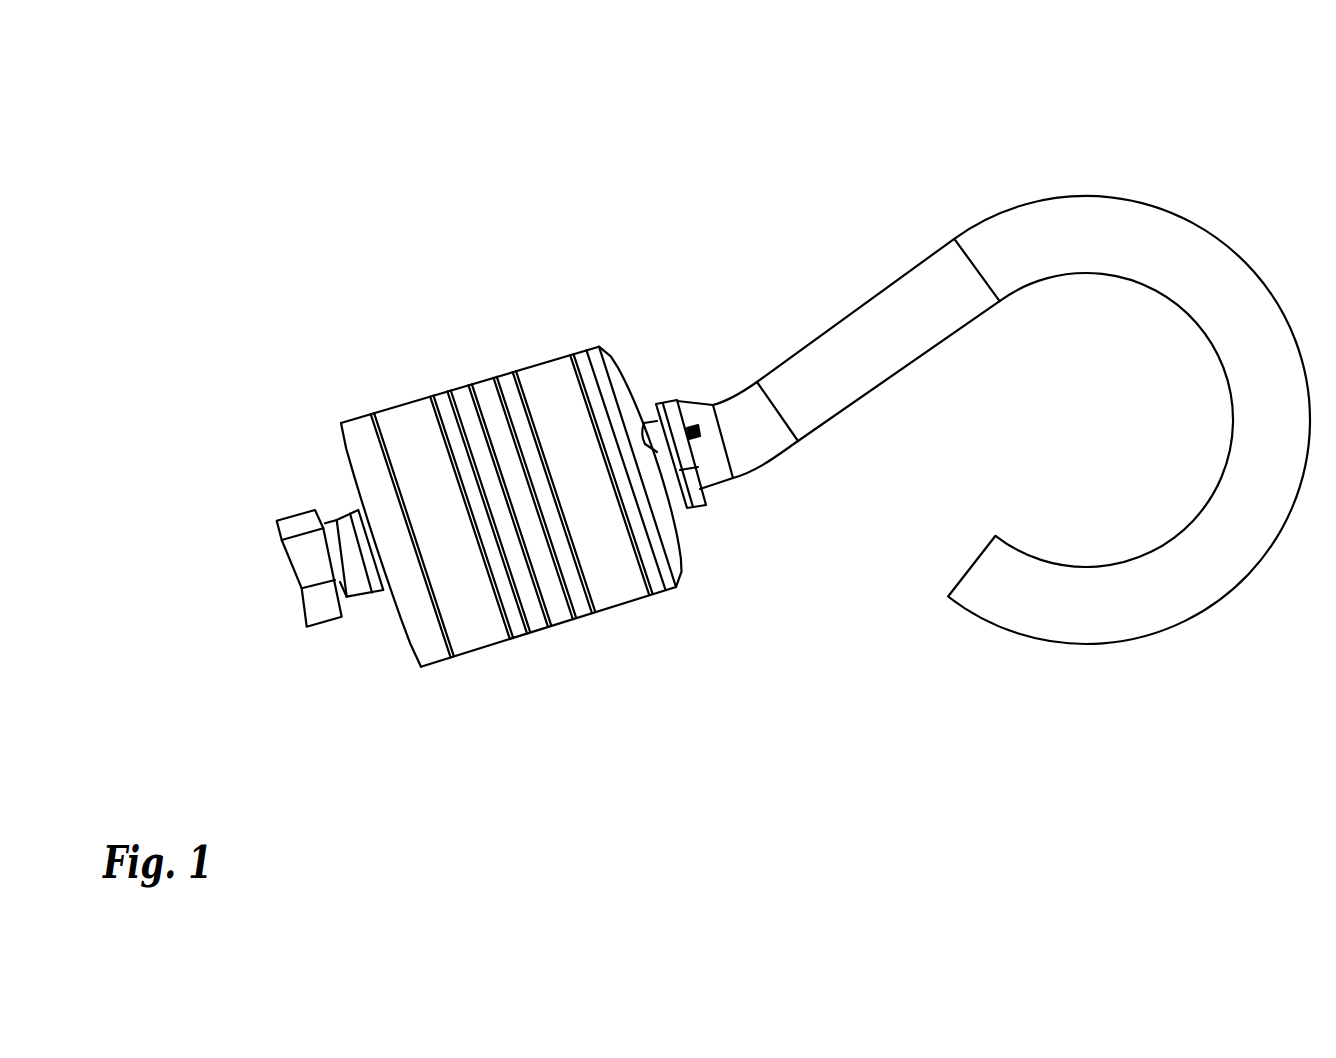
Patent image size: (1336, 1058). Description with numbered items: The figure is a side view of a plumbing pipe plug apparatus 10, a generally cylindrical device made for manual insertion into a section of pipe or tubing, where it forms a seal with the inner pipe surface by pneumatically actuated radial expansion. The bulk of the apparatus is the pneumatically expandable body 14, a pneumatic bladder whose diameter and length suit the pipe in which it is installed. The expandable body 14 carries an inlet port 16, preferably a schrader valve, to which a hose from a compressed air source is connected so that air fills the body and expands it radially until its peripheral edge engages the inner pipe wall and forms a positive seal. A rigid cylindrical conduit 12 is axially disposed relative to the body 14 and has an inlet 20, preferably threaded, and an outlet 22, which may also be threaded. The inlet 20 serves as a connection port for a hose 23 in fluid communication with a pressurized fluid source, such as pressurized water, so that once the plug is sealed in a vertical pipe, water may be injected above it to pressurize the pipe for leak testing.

The plumbing pipe plug apparatus 10 is at (792, 418).
The cylindrical conduit 12 is at (431, 630).
The pneumatically expandable body 14 is at (554, 378).
The inlet port 16 is at (683, 436).
The inlet 20 is at (668, 400).
The outlet 22 is at (317, 608).
The hose 23 is at (1139, 227).